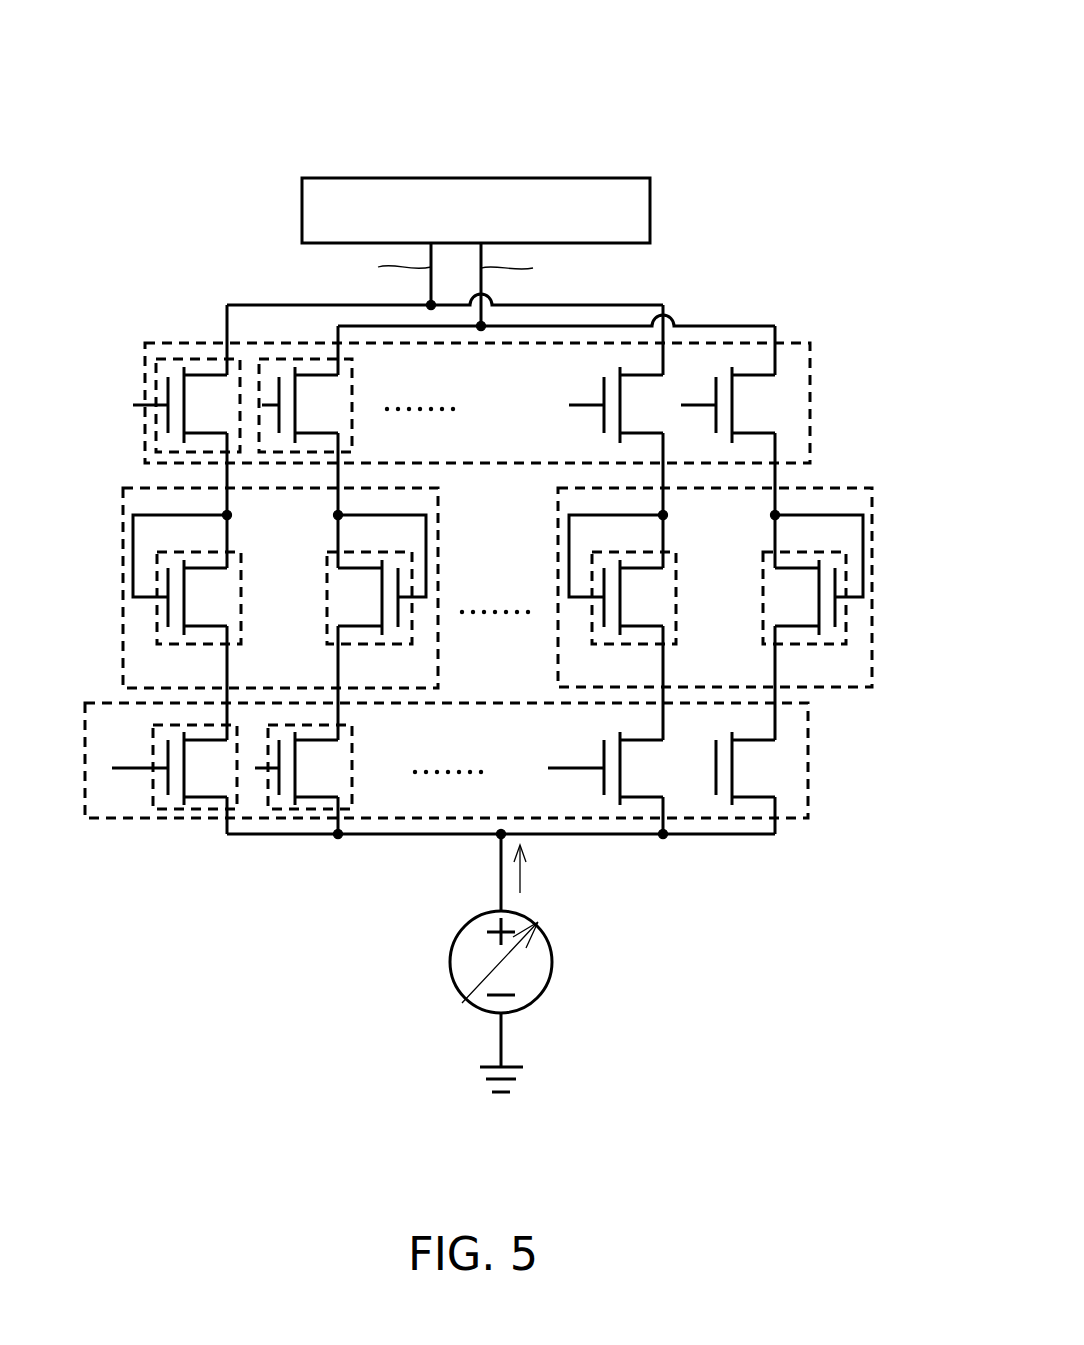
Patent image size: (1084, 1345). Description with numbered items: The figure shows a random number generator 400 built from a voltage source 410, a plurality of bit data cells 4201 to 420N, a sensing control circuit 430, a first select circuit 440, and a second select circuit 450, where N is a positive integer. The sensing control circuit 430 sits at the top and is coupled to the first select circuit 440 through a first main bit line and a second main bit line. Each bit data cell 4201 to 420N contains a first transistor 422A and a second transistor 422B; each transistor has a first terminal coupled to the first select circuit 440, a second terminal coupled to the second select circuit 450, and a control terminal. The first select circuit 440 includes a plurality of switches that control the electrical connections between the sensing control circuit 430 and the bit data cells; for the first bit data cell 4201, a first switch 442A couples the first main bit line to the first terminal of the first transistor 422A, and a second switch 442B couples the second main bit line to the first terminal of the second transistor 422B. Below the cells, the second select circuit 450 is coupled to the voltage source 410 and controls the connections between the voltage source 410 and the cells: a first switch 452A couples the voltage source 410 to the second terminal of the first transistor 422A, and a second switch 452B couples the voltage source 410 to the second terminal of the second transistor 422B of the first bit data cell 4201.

The random number generator 400 is at (722, 108).
The voltage source 410 is at (552, 962).
The sensing control circuit 430 is at (500, 227).
The first select circuit 440 is at (145, 368).
The first switch 442A is at (182, 357).
The second switch 442B is at (353, 378).
The bit data cell 4201 is at (438, 561).
The bit data cell 420N is at (872, 507).
The first transistor 422A is at (241, 573).
The second transistor 422B is at (327, 610).
The second select circuit 450 is at (808, 778).
The first switch 452A is at (197, 818).
The second switch 452B is at (353, 748).